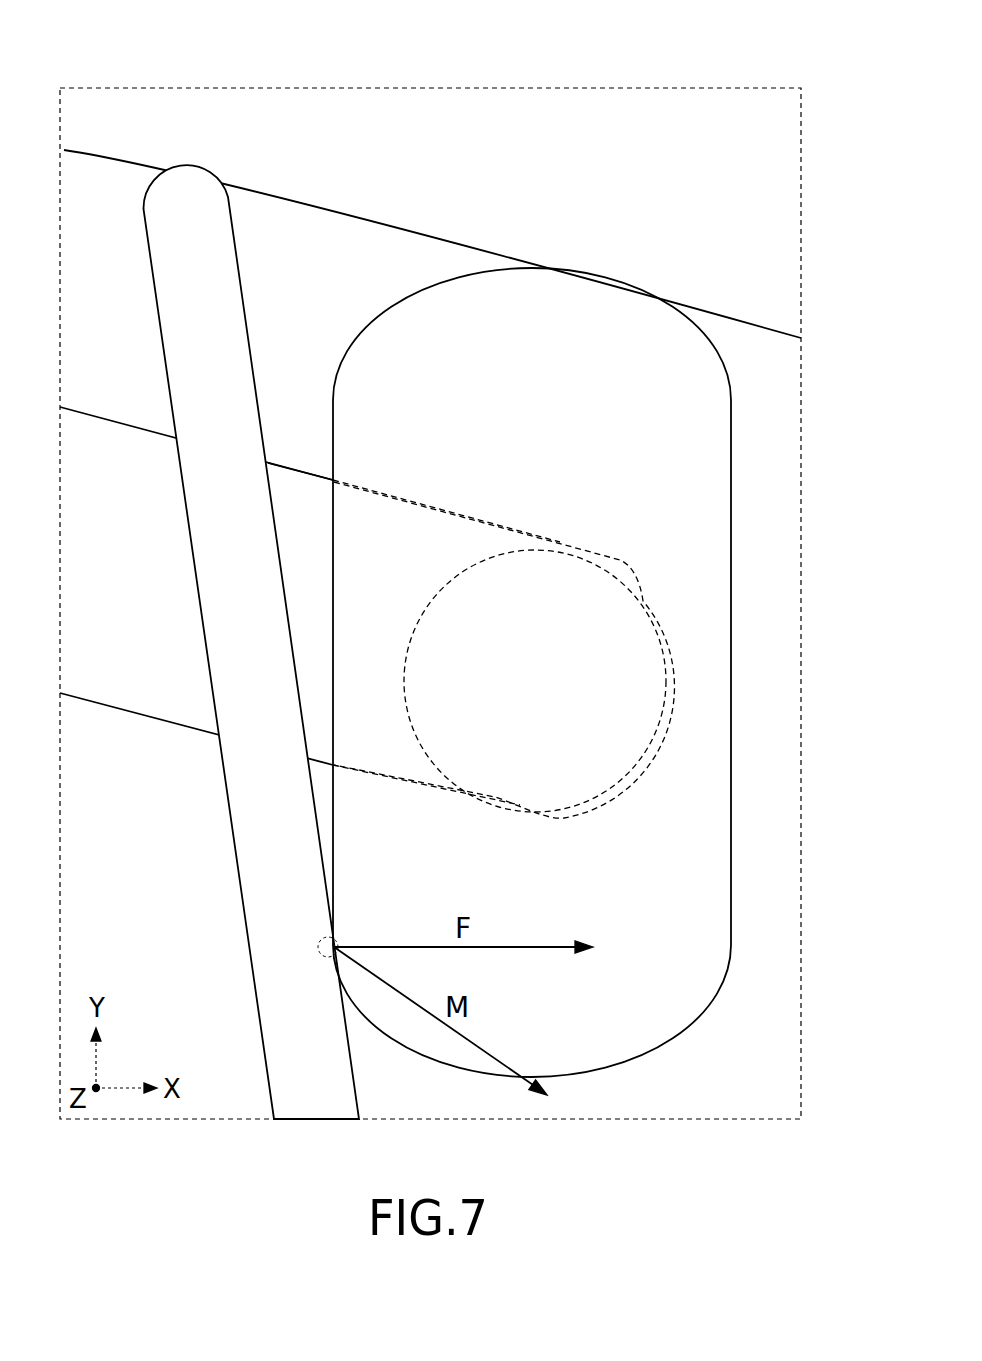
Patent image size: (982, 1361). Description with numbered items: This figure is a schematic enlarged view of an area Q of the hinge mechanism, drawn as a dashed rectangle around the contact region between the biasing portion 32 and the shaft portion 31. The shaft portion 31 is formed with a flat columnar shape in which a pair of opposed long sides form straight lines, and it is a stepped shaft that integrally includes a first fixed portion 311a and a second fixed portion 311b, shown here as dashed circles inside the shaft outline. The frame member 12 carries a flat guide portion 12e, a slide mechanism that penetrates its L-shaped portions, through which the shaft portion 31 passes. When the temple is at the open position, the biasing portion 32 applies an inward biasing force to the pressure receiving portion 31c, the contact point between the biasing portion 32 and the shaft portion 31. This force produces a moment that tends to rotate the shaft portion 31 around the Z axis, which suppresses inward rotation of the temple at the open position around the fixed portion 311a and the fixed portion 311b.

The frame member 12 is at (112, 190).
The flat guide portion 12e is at (270, 465).
The shaft portion 31 is at (593, 320).
The first fixed portion 311a is at (609, 657).
The second fixed portion 311b is at (536, 678).
The pressure receiving portion 31c is at (320, 948).
The biasing portion 32 is at (190, 181).
The area Q is at (803, 127).